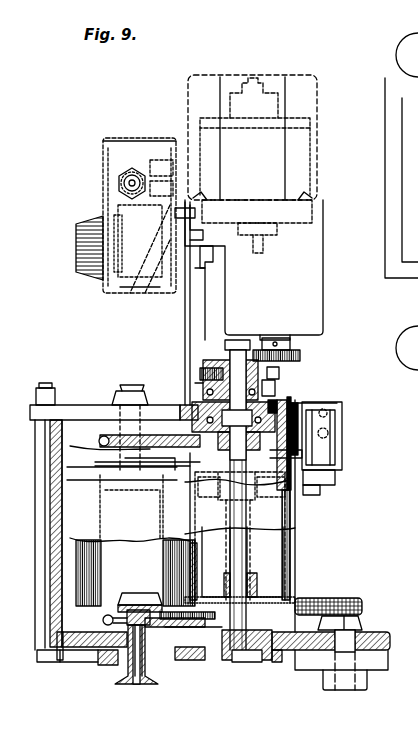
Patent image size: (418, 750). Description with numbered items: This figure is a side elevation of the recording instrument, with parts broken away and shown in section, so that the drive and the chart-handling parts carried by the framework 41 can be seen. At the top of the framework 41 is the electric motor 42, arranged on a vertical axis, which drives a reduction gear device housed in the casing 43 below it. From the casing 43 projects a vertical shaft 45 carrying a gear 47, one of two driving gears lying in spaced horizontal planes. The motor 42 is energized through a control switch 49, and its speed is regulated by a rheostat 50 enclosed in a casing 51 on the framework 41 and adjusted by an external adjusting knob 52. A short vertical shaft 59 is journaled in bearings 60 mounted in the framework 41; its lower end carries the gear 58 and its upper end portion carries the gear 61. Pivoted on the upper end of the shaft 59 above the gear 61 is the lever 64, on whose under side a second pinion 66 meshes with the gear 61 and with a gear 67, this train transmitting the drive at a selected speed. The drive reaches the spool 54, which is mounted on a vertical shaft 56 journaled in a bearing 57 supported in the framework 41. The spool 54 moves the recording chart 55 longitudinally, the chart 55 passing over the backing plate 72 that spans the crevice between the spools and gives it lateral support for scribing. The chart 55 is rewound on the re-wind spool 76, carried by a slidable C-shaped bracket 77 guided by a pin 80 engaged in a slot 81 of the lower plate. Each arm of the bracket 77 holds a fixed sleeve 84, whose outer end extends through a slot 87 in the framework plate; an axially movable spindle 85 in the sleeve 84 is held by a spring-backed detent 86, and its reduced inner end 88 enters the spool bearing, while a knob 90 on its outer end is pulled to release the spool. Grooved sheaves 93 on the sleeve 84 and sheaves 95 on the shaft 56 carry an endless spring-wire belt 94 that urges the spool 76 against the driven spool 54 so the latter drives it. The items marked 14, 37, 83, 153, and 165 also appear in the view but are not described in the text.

The housing 14 is at (407, 365).
The wheel 37 is at (398, 38).
The framework 41 is at (183, 330).
The electric motor 42 is at (318, 115).
The casing 43 is at (323, 287).
The vertical shaft 45 is at (282, 372).
The gear 47 is at (302, 354).
The control switch 49 is at (113, 172).
The rheostat 50 is at (136, 292).
The casing 51 is at (112, 185).
The adjusting knob 52 is at (75, 271).
The spool 54 is at (290, 540).
The recording chart 55 is at (300, 580).
The vertical shaft 56 is at (290, 560).
The bearing 57 is at (228, 660).
The intermediate gear 58 is at (342, 462).
The short vertical shaft 59 is at (322, 397).
The bearings 60 is at (195, 383).
The gear 61 is at (277, 390).
The lever 64 is at (210, 332).
The second pinion 66 is at (205, 371).
The gear 67 is at (272, 398).
The backing plate 72 is at (291, 490).
The re-wind spool 76 is at (62, 571).
The C-shaped bracket 77 is at (48, 430).
The pin 80 is at (60, 662).
The slot 81 is at (100, 665).
The coil 83 is at (150, 590).
The sleeve 84 is at (112, 408).
The spindle 85 is at (120, 668).
The spring-backed detent 86 is at (155, 655).
The slot 87 is at (168, 648).
The reduced inner end 88 is at (70, 460).
The knob 90 is at (136, 390).
The grooved sheave 93 is at (112, 436).
The endless belt 94 is at (190, 436).
The sheave 95 is at (272, 662).
The bracket 153 is at (401, 192).
The switch 165 is at (342, 425).